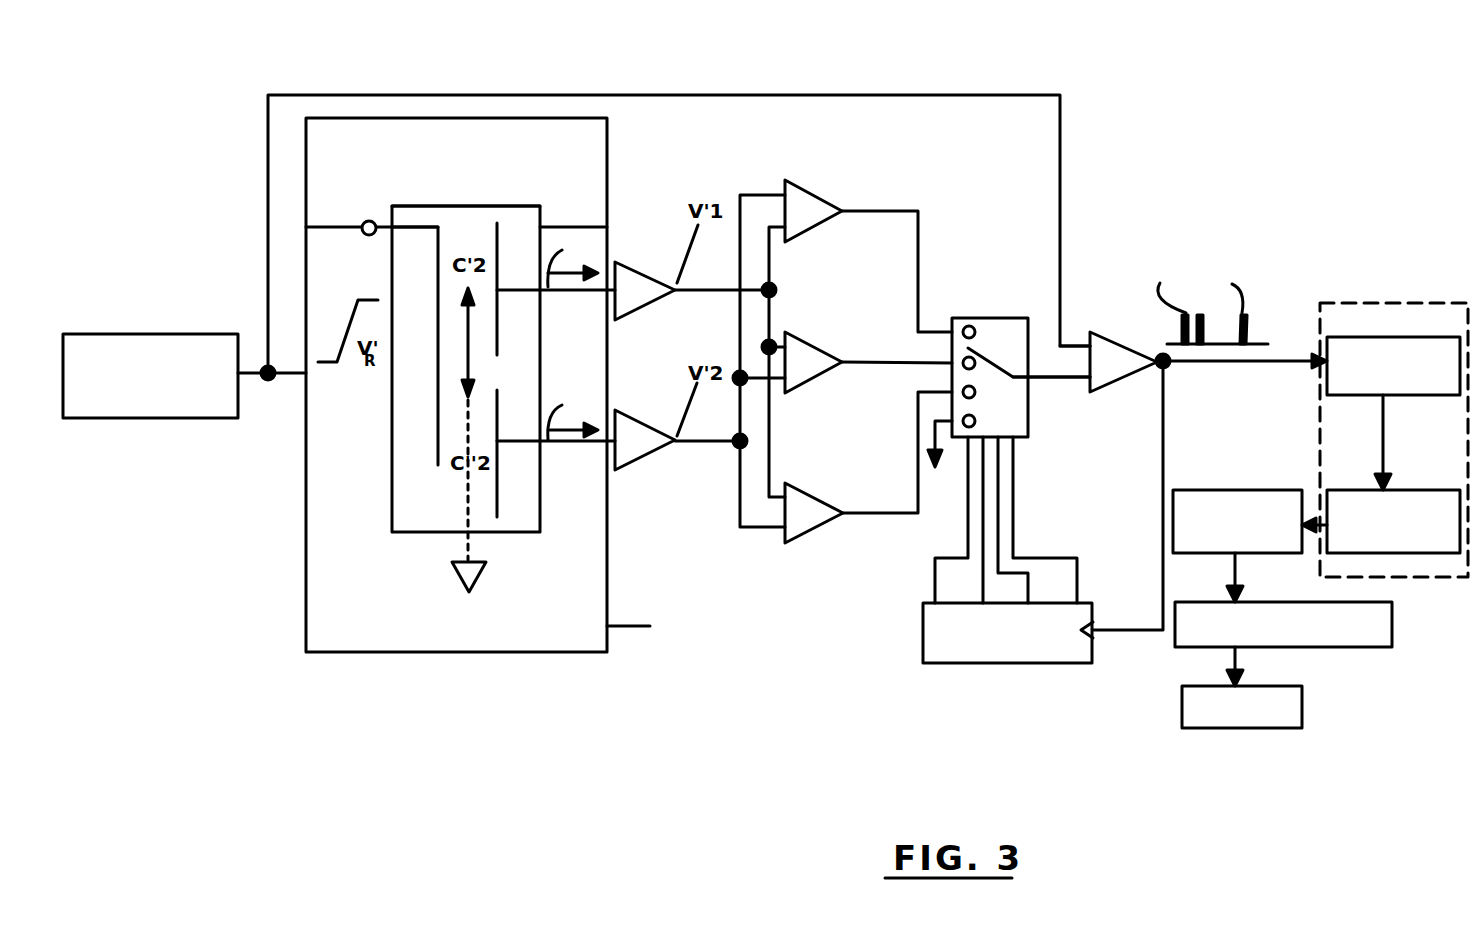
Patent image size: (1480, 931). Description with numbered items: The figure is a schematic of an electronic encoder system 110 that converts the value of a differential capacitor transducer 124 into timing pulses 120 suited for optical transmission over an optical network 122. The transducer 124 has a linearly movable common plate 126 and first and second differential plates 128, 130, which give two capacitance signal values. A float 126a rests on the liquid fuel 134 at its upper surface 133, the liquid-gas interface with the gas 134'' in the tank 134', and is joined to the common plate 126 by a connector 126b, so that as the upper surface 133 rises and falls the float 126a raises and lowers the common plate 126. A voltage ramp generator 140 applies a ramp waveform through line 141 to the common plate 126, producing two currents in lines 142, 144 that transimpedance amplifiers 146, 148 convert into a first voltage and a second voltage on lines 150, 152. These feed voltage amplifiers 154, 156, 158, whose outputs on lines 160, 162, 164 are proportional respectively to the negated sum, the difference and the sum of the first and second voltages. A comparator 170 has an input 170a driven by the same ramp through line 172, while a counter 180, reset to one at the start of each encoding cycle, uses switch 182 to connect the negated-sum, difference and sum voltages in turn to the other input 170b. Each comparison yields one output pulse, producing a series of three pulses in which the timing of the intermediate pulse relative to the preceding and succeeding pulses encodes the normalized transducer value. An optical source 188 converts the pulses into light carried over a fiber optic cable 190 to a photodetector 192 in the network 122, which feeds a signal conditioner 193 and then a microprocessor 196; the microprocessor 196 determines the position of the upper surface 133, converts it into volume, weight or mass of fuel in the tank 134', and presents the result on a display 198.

The electronic encoder system 110 is at (1132, 142).
The timing pulses 120 is at (1200, 312).
The optical network 122 is at (1368, 303).
The differential capacitor transducer 124 is at (475, 205).
The common plate 126 is at (436, 297).
The float 126a is at (366, 221).
The connector 126b is at (413, 223).
The first differential plate 128 is at (500, 268).
The second differential plate 130 is at (500, 425).
The upper surface 133 is at (568, 226).
The liquid fuel 134 is at (456, 385).
The tank 134' is at (656, 627).
The gas 134'' is at (470, 352).
The voltage ramp generator 140 is at (150, 418).
The line 141 is at (250, 375).
The line 142 is at (578, 297).
The line 144 is at (583, 443).
The transimpedance amplifier 146 is at (635, 270).
The transimpedance amplifier 148 is at (635, 418).
The line 150 is at (700, 292).
The line 152 is at (693, 443).
The voltage amplifier 154 is at (813, 232).
The voltage amplifier 156 is at (813, 380).
The voltage amplifier 158 is at (813, 532).
The line 160 is at (918, 240).
The line 162 is at (867, 360).
The line 164 is at (918, 487).
The comparator 170 is at (1118, 375).
The comparator input 170a is at (1086, 336).
The comparator input 170b is at (1088, 388).
The line 172 is at (683, 95).
The counter 180 is at (922, 647).
The switch 182 is at (1028, 437).
The optical source 188 is at (1360, 395).
The fiber optic cable 190 is at (1386, 440).
The photodetector 192 is at (1405, 553).
The signal conditioner 193 is at (1208, 490).
The microprocessor 196 is at (1333, 647).
The display 198 is at (1255, 728).